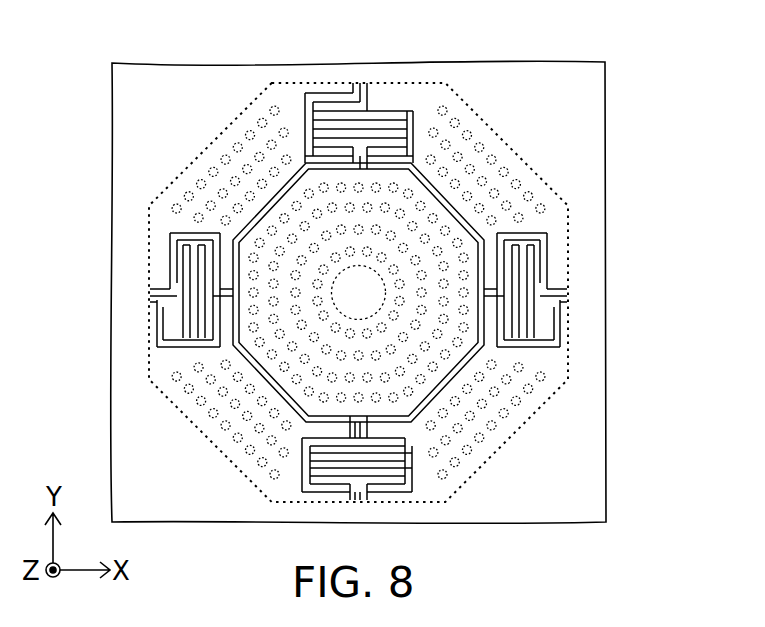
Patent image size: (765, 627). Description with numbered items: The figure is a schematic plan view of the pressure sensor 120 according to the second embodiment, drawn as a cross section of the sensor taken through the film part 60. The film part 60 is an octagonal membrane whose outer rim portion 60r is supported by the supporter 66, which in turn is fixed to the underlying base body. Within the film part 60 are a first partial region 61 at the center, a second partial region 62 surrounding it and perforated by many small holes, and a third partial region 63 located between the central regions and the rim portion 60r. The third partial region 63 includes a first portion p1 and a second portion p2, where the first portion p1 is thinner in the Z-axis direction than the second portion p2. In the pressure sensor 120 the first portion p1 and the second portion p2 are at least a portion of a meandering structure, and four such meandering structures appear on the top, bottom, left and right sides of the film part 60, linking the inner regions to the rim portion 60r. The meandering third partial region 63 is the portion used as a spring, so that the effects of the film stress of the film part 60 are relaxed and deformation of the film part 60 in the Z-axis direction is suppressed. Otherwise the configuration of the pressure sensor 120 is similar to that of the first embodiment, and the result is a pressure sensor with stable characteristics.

The pressure sensor 120 is at (624, 100).
The supporter 66 is at (558, 166).
The rim portion 60r is at (568, 246).
The film part 60 is at (200, 173).
The first partial region 61 is at (359, 292).
The second partial region 62 is at (434, 291).
The third partial region 63 is at (534, 226).
The first portion p1 is at (532, 303).
The second portion p2 is at (540, 305).